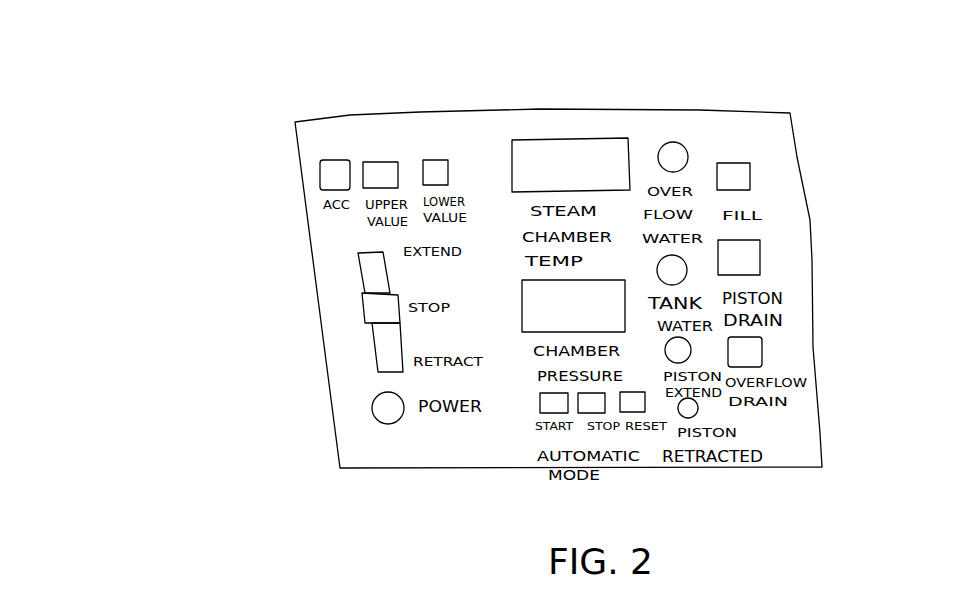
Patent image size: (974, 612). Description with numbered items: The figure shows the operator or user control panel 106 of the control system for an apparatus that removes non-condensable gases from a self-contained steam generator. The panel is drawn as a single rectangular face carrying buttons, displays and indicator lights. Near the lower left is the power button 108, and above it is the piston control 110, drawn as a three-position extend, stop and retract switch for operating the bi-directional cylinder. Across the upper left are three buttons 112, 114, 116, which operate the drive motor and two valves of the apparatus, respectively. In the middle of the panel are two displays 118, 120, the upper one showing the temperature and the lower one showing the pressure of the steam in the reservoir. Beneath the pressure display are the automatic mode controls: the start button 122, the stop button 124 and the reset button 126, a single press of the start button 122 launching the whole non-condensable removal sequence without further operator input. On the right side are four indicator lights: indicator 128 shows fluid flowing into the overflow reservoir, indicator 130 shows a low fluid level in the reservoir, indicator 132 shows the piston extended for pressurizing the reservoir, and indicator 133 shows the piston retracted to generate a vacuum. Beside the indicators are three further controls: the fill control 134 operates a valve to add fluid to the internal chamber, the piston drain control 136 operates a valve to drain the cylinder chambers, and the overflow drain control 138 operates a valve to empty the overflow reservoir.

The control panel 106 is at (150, 110).
The power button 108 is at (385, 424).
The piston control 110 is at (362, 286).
The drive motor control 112 is at (320, 170).
The valve control 114 is at (377, 163).
The valve control 116 is at (430, 160).
The temperature display 118 is at (538, 142).
The pressure display 120 is at (522, 313).
The start button 122 is at (538, 403).
The stop button 124 is at (605, 403).
The reset button 126 is at (645, 400).
The overflow water indicator 128 is at (688, 147).
The tank water indicator 130 is at (688, 269).
The piston extended indicator 132 is at (692, 350).
The piston retracted indicator 133 is at (698, 404).
The fill control 134 is at (750, 172).
The piston drain control 136 is at (760, 240).
The overflow drain control 138 is at (762, 338).